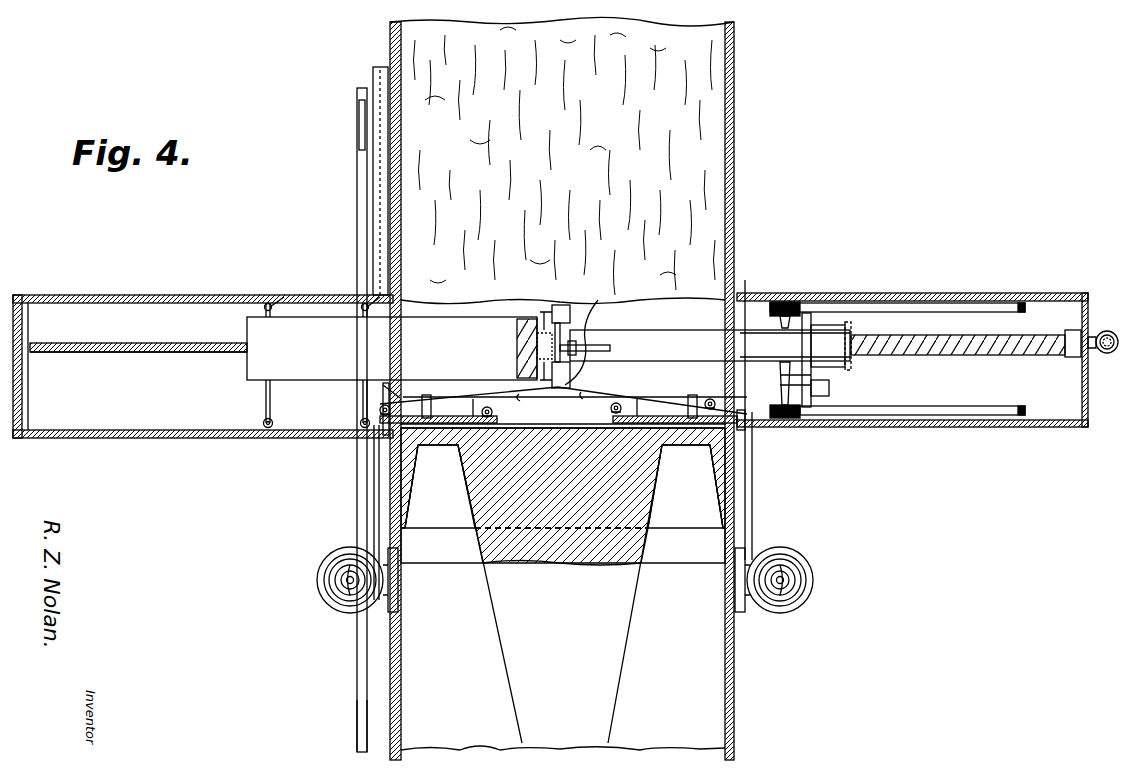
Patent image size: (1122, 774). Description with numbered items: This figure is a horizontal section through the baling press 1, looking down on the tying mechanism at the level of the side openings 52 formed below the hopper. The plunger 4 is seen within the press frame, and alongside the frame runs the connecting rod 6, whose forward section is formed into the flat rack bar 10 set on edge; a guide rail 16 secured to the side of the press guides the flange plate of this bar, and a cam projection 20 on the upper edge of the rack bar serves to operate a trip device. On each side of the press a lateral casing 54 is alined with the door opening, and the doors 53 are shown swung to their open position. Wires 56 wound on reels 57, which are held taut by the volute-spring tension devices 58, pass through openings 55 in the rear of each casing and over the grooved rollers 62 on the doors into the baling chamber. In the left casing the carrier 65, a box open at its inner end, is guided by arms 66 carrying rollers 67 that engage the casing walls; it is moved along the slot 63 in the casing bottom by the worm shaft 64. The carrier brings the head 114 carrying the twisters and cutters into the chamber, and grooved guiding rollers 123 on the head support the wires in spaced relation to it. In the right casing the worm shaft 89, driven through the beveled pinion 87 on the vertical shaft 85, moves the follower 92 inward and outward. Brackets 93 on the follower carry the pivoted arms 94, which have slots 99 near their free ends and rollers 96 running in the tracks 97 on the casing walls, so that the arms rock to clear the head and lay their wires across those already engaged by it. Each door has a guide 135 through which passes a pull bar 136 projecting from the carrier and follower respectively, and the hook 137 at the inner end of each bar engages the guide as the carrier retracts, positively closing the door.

The baling press 1 is at (737, 722).
The plunger 4 is at (676, 538).
The connecting rod 6 is at (362, 707).
The rack bar 10 is at (365, 211).
The guide rail 16 is at (373, 77).
The cam projection 20 is at (362, 128).
The openings 52 is at (445, 318).
The doors 53 is at (445, 445).
The lateral casings 54 is at (193, 295).
The openings 55 is at (380, 433).
The wires 56 is at (378, 502).
The reels 57 is at (324, 595).
The tension devices 58 is at (328, 566).
The grooved rollers 62 is at (378, 410).
The slot 63 is at (124, 352).
The worm shaft 64 is at (170, 343).
The carrier 65 is at (392, 348).
The guiding arms 66 is at (297, 301).
The rollers 67 is at (266, 303).
The vertical shaft 85 is at (1104, 331).
The beveled pinion 87 is at (1112, 355).
The worm shaft 89 is at (970, 352).
The follower 92 is at (812, 378).
The brackets 93 is at (832, 325).
The arms 94 is at (740, 343).
The rollers 96 is at (805, 313).
The tracks 97 is at (893, 303).
The slots 99 is at (590, 345).
The head 114 is at (582, 292).
The grooved guiding rollers 123 is at (598, 300).
The guide 135 is at (428, 397).
The pull bars 136 is at (473, 403).
The hook 137 is at (610, 390).